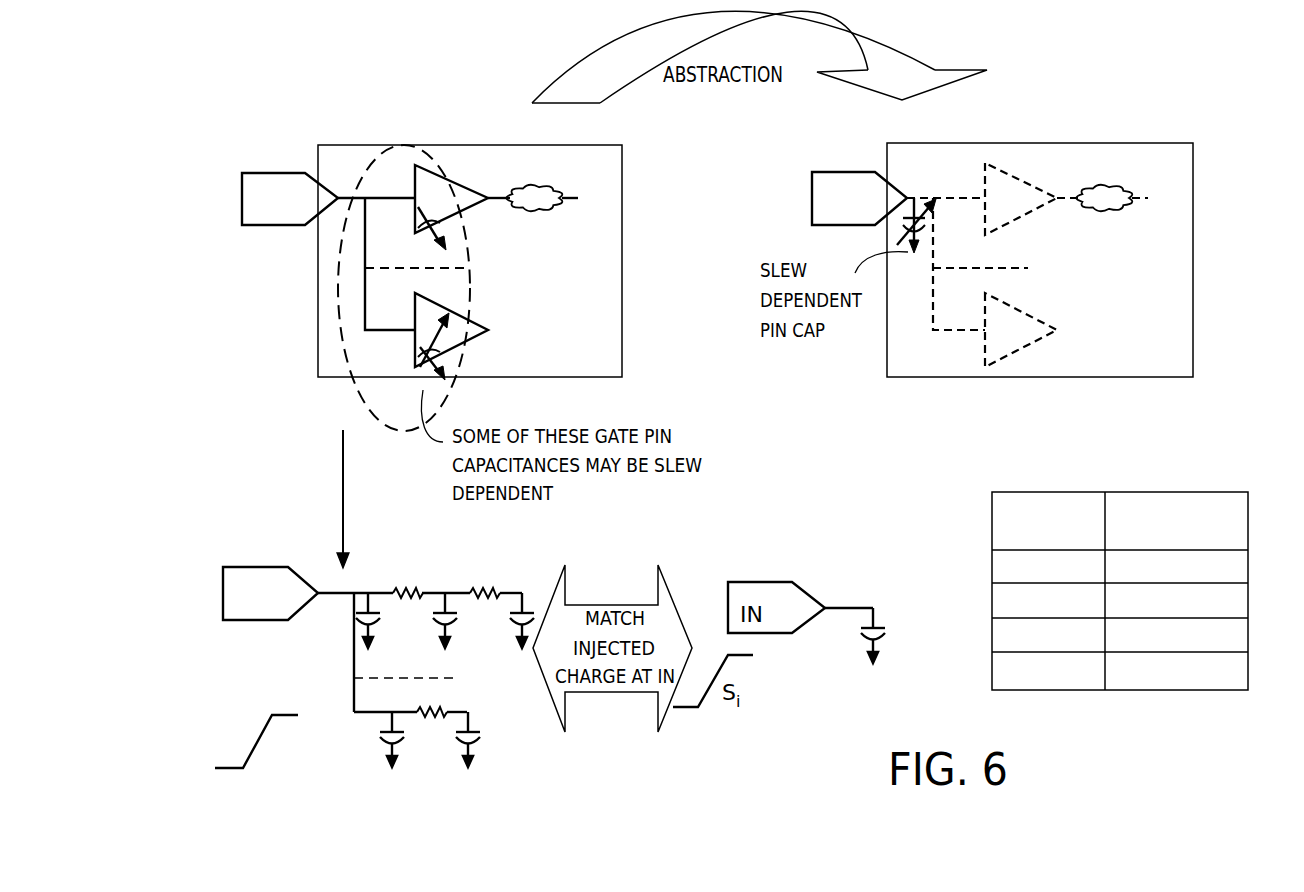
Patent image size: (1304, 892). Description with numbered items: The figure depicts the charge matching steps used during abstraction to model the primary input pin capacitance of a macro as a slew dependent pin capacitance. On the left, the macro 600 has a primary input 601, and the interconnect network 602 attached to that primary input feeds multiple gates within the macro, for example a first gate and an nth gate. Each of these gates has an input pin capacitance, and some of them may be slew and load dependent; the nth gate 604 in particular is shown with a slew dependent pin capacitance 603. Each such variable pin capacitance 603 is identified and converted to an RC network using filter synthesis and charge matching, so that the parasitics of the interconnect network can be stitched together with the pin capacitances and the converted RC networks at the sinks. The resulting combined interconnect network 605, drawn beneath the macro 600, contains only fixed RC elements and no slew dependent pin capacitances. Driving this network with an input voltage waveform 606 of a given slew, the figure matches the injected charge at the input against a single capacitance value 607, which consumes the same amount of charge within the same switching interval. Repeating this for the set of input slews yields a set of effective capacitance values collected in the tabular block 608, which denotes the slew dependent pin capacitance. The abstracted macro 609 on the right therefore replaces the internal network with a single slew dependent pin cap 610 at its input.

The macro 600 is at (336, 145).
The primary input 601 is at (257, 173).
The interconnect network 602 is at (388, 197).
The slew dependent pin capacitance 603 is at (455, 327).
The Gate-n 604 is at (473, 330).
The combined interconnect network 605 is at (512, 585).
The input slew waveform 606 is at (282, 715).
The capacitance value 607 is at (877, 622).
The tabular form of effective capacitance values 608 is at (1178, 492).
The abstracted circuit block 609 is at (1112, 143).
The slew dependent pin cap 610 is at (913, 198).